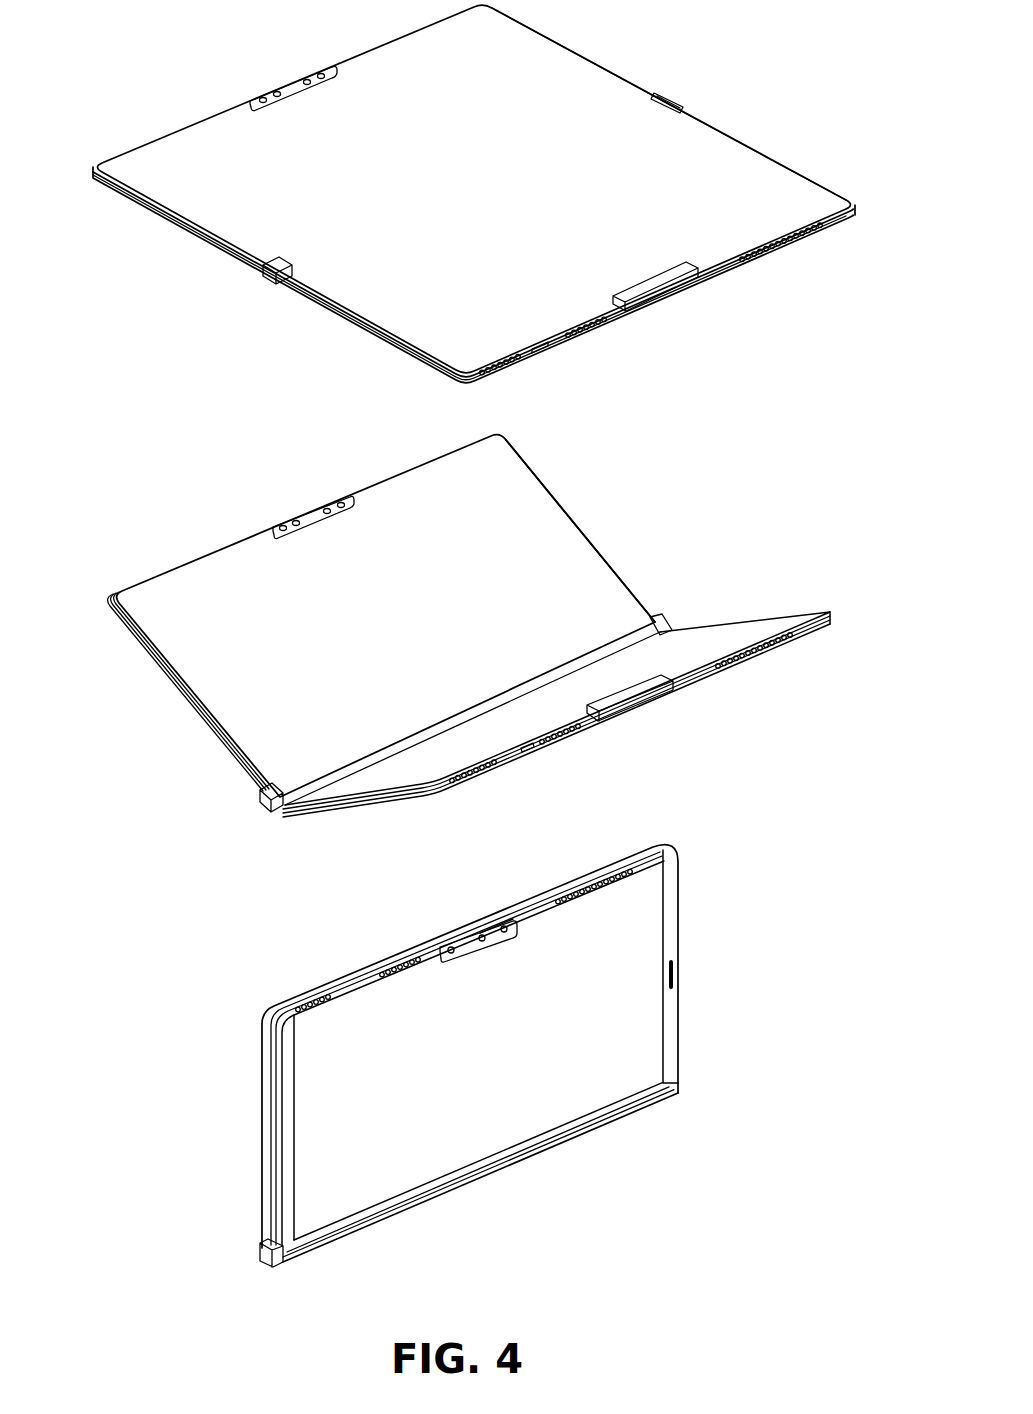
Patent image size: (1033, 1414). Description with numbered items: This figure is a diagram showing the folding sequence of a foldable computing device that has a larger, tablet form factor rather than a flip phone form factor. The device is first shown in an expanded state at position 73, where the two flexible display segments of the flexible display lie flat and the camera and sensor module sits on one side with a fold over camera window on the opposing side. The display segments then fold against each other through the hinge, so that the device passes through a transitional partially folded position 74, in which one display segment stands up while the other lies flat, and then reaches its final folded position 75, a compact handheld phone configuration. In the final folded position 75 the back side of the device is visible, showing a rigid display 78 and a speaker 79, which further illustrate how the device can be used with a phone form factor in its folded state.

The position 73 is at (465, 191).
The transitional partially folded position 74 is at (450, 630).
The final folded position 75 is at (477, 1062).
The rigid display 78 is at (658, 880).
The speaker 79 is at (674, 972).